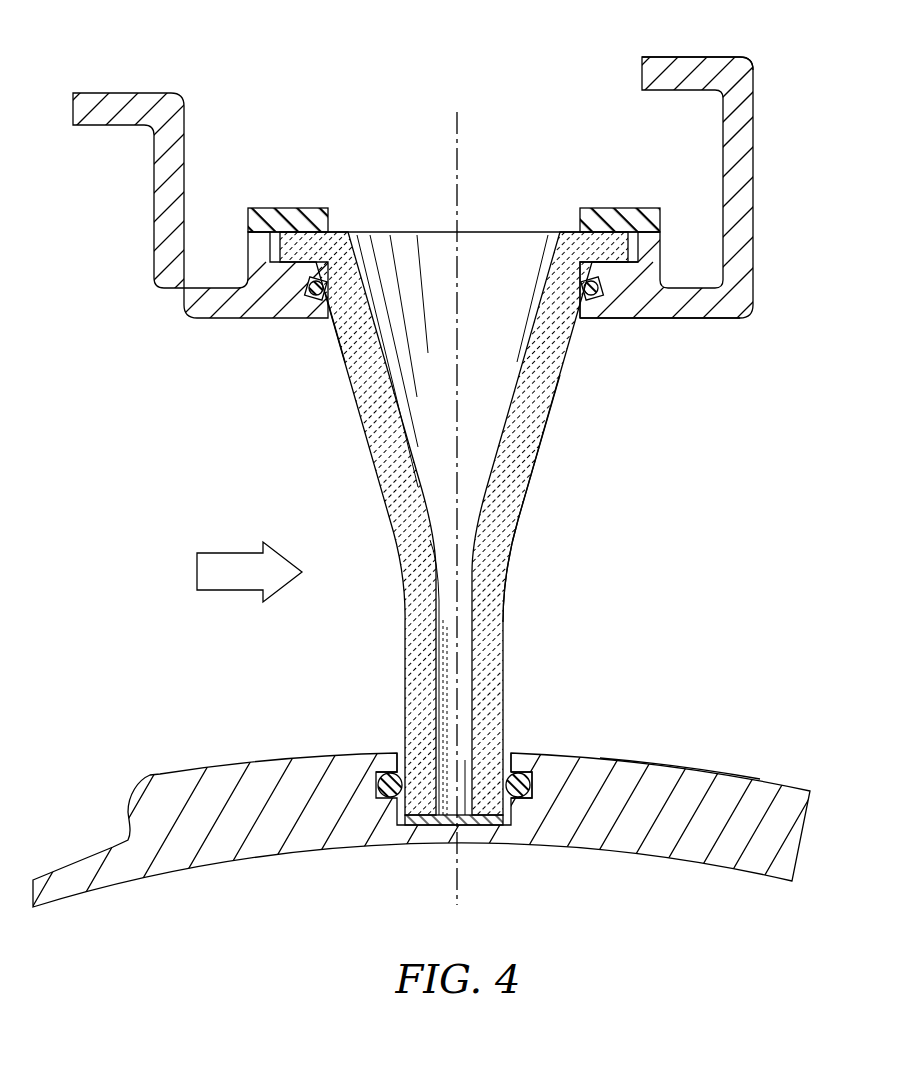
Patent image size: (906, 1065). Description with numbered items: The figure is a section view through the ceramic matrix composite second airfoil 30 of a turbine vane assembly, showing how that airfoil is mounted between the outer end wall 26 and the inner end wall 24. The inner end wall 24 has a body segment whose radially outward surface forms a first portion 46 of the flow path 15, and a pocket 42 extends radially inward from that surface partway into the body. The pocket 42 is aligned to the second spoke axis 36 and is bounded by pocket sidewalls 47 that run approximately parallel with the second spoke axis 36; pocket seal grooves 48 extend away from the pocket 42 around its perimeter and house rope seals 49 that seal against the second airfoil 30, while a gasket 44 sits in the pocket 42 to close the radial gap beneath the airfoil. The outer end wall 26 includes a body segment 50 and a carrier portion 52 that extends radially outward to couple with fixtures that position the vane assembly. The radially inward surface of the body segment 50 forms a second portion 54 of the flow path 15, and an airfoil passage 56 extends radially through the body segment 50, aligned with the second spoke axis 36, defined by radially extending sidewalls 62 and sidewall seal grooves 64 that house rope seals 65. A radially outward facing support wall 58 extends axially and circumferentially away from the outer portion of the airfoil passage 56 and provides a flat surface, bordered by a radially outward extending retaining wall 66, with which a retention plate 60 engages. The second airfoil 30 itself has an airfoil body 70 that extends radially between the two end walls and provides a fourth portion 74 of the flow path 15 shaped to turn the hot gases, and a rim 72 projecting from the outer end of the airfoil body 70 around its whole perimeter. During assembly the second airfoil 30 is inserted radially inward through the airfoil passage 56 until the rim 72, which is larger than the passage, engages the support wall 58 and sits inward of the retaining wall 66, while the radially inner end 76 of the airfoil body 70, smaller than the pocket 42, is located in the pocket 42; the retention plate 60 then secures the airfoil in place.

The flow path 15 is at (222, 578).
The inner end wall 24 is at (804, 857).
The outer end wall 26 is at (766, 115).
The second airfoil 30 is at (509, 615).
The second spoke axis 36 is at (447, 876).
The pocket 42 is at (510, 748).
The gasket 44 is at (493, 836).
The first portion of the flow path 46 is at (708, 768).
The pocket sidewalls 47 is at (397, 752).
The pocket seal grooves 48 is at (376, 787).
The rope seals 49 is at (532, 790).
The body segment 50 is at (645, 324).
The carrier portion 52 is at (760, 56).
The second portion of the flow path 54 is at (273, 320).
The airfoil passage 56 is at (333, 335).
The radially outward facing support wall 58 is at (300, 258).
The retention plate 60 is at (284, 207).
The radially extending sidewalls 62 is at (580, 300).
The sidewall seal grooves 64 is at (303, 298).
The rope seals 65 is at (612, 303).
The retaining wall 66 is at (650, 253).
The airfoil body 70 is at (516, 552).
The rim 72 is at (328, 240).
The fourth portion of the flow path 74 is at (528, 480).
The radially inner end 76 is at (523, 761).